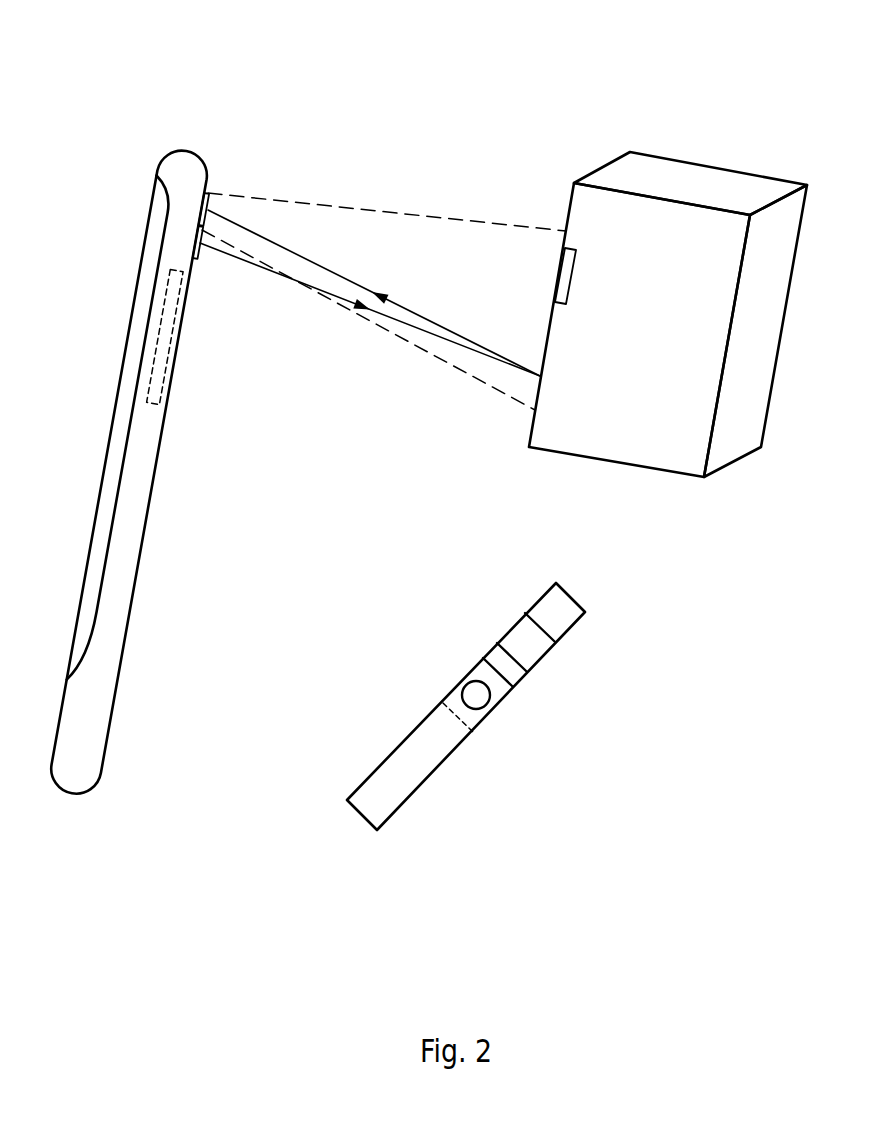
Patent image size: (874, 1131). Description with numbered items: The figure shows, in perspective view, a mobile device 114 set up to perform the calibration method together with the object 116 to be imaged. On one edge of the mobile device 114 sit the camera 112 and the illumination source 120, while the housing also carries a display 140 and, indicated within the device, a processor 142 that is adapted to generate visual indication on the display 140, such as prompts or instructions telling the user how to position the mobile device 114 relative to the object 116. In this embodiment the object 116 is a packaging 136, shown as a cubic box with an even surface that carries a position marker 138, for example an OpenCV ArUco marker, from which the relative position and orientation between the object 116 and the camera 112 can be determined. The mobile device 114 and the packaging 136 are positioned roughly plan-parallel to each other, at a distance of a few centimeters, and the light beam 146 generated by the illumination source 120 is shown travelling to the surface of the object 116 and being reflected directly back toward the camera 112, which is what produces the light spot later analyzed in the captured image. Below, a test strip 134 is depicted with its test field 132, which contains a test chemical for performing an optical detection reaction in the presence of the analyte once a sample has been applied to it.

The camera 112 is at (210, 203).
The mobile device 114 is at (197, 112).
The object 116 is at (721, 136).
The illumination source 120 is at (200, 252).
The test field 132 is at (473, 694).
The test strip 134 is at (538, 732).
The packaging 136 is at (678, 258).
The position marker 138 is at (568, 274).
The display 140 is at (118, 438).
The processor 142 is at (178, 338).
The light beam 146 is at (350, 281).